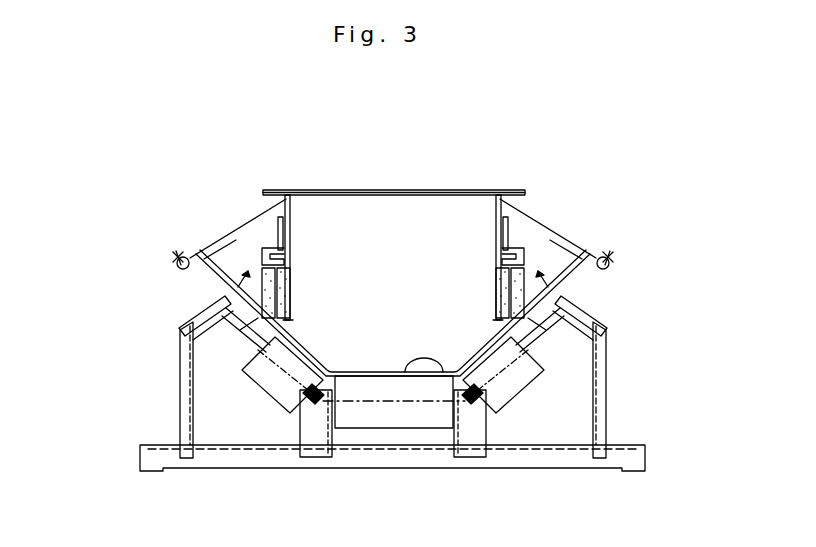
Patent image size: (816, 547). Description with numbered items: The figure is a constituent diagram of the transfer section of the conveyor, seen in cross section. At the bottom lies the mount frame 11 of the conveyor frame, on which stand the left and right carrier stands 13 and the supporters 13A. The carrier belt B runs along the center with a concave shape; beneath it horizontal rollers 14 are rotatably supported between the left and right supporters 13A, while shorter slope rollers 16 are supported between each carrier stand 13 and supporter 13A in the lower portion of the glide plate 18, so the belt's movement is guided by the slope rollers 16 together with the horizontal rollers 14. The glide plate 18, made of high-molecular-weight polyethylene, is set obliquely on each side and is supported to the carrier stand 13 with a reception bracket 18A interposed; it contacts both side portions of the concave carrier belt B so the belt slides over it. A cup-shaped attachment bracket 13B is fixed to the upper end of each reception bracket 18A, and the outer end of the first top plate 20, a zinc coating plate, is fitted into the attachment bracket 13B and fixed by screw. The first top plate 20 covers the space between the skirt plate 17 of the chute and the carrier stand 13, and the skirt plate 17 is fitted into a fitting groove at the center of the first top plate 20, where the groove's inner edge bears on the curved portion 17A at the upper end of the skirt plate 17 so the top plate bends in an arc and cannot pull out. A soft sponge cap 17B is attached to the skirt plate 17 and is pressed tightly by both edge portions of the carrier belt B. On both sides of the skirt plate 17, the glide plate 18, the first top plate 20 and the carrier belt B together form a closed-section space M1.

The mount frame 11 is at (577, 458).
The carrier stand 13 is at (185, 385).
The supporter 13A is at (318, 447).
The attachment bracket 13B is at (175, 266).
The horizontal rollers 14 is at (378, 413).
The slope rollers 16 is at (305, 398).
The skirt plate 17 is at (311, 194).
The curved portion 17A is at (266, 191).
The sponge cap 17B is at (294, 292).
The glide plate 18 is at (220, 267).
The reception bracket 18A is at (200, 287).
The first top plate 20 is at (232, 225).
The closed-section space M1 is at (257, 378).
The carrier belt B is at (443, 377).